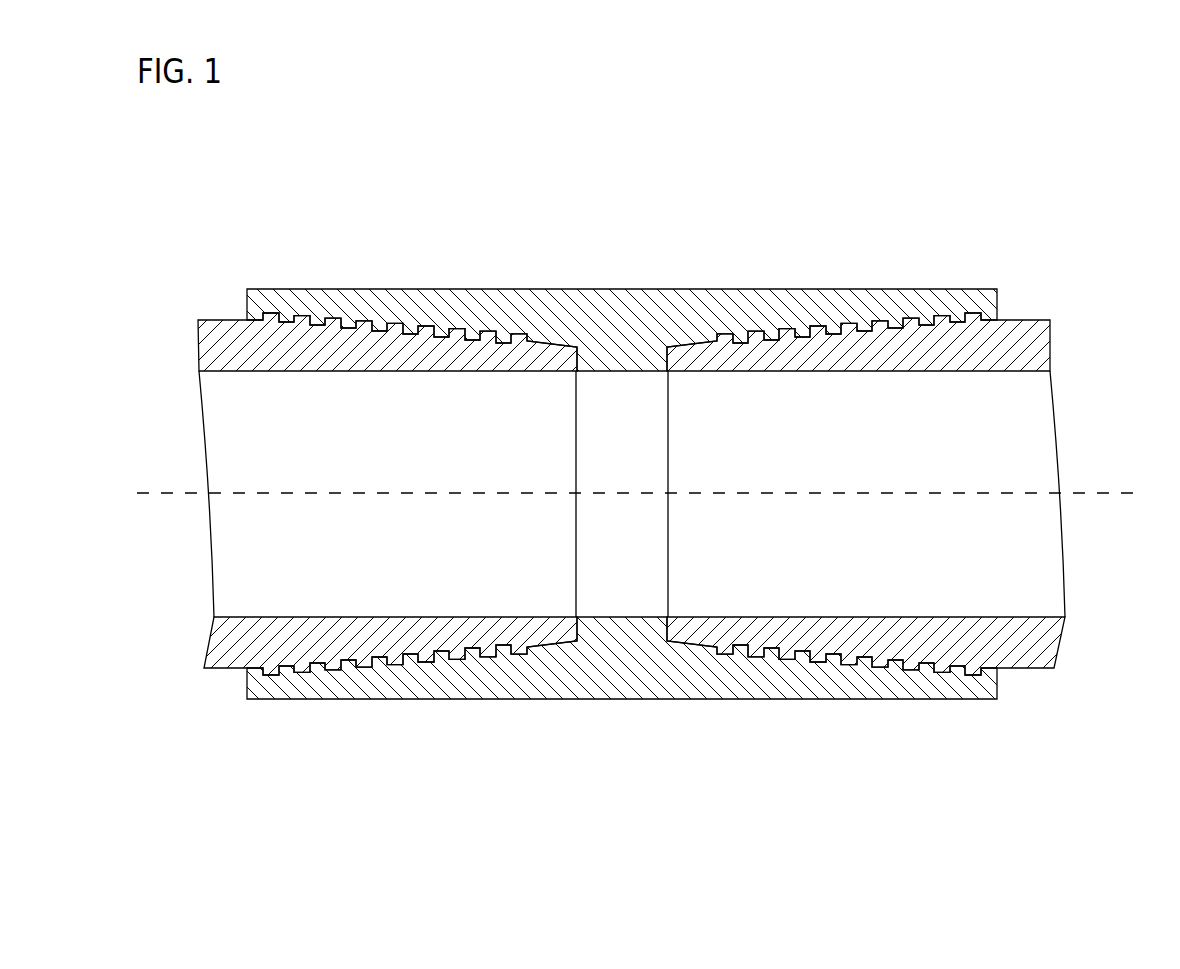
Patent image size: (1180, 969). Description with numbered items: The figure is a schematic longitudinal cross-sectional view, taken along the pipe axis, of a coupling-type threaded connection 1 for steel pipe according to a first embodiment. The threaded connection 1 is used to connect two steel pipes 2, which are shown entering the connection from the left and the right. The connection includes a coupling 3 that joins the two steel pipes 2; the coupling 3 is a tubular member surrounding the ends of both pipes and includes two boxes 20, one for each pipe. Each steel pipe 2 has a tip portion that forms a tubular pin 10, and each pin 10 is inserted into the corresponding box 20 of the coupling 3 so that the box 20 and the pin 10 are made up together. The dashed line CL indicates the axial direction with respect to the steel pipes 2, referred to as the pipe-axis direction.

The threaded connection 1 is at (652, 450).
The steel pipe 2 is at (235, 343).
The coupling 3 is at (646, 307).
The pin 10 is at (349, 438).
The box 20 is at (333, 211).
The pipe-axis direction CL is at (1110, 492).